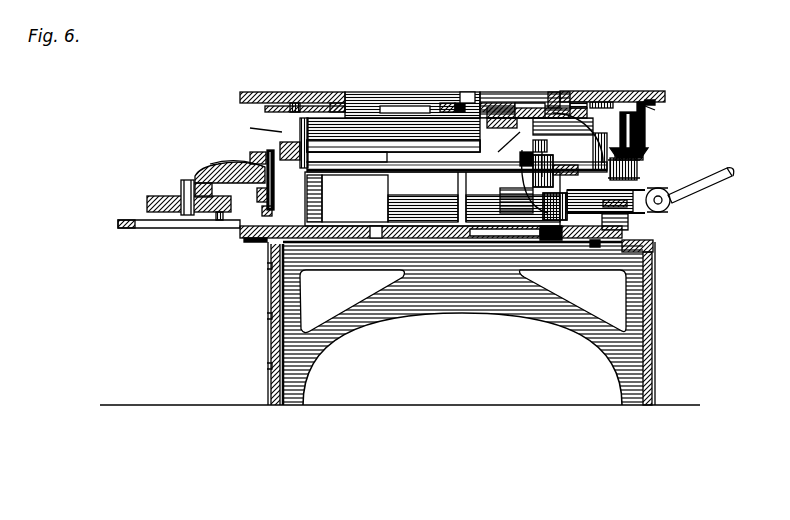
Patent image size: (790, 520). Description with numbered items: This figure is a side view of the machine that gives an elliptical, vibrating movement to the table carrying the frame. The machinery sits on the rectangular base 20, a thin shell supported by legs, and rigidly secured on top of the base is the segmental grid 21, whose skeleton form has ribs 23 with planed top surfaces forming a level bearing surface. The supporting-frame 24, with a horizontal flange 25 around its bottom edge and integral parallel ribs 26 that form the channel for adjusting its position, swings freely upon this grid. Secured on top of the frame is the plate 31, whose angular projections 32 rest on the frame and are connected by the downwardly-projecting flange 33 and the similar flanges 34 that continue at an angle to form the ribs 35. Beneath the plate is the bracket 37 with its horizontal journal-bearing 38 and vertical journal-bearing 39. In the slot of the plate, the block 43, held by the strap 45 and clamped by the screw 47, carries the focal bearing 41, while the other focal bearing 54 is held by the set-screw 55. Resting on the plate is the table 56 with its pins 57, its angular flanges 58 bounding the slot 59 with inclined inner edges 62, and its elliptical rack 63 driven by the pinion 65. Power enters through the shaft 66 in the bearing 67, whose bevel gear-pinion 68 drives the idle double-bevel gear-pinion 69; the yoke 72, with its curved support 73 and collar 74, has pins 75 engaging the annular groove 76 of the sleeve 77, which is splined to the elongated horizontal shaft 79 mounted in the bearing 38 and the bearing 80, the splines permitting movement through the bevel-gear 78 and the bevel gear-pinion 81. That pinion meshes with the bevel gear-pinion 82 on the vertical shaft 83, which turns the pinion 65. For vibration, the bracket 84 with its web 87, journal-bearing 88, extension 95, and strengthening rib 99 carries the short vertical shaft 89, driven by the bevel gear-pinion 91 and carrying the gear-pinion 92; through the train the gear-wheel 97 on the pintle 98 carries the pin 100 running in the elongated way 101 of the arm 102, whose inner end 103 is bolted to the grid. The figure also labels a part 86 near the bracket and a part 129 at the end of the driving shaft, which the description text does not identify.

The rectangular base 20 is at (528, 313).
The segmental grid 21 is at (602, 244).
The ribs 23 is at (380, 246).
The supporting-frame 24 is at (370, 199).
The horizontal flange 25 is at (270, 211).
The parallel ribs 26 is at (424, 199).
The plate 31 is at (270, 109).
The angular projections 32 is at (336, 103).
The downwardly-projecting flange 33 is at (304, 124).
The flanges 34 is at (370, 118).
The ribs 35 is at (530, 108).
The bracket 37 is at (565, 125).
The horizontal journal-bearing 38 is at (574, 166).
The vertical journal-bearing 39 is at (640, 130).
The focal bearing 41 is at (464, 92).
The block 43 is at (525, 103).
The strap 45 is at (500, 124).
The screw or bolt 47 is at (505, 140).
The focal bearing 54 is at (458, 103).
The set-screw 55 is at (440, 104).
The frame support or table 56 is at (665, 91).
The pins 57 is at (396, 106).
The angular flanges 58 is at (600, 102).
The slot 59 is at (576, 102).
The inner edges 62 is at (355, 92).
The elliptical rack 63 is at (290, 92).
The pinion 65 is at (655, 103).
The shaft 66 is at (642, 192).
The bearing 67 is at (618, 226).
The bevel gear-pinion 68 is at (592, 242).
The idle double-bevel gear-pinion 69 is at (515, 239).
The yoke 72 is at (522, 185).
The support 73 is at (524, 212).
The collar 74 is at (548, 240).
The pins 75 is at (524, 160).
The annular groove 76 is at (536, 148).
The sleeve 77 is at (542, 154).
The bevel-gear 78 is at (552, 166).
The elongated horizontal shaft 79 is at (418, 170).
The bearing 80 is at (320, 158).
The bevel gear-pinion 81 is at (614, 180).
The bevel gear-pinion 82 is at (650, 156).
The vertical shaft 83 is at (655, 111).
The bracket 84 is at (250, 156).
The nut 86 is at (288, 146).
The web 87 is at (258, 192).
The vertical journal-bearing 88 is at (268, 158).
The short vertical shaft 89 is at (255, 128).
The bevel gear-pinion 91 is at (318, 204).
The gear-pinion 92 is at (300, 239).
The extension 95 is at (206, 165).
The gear-wheel 97 is at (150, 198).
The stub shaft or pintle 98 is at (182, 183).
The vertical rib 99 is at (230, 163).
The pin or lug 100 is at (219, 222).
The elongated way 101 is at (182, 229).
The arm or piece 102 is at (130, 229).
The inner end 103 is at (256, 244).
The handle 129 is at (716, 180).